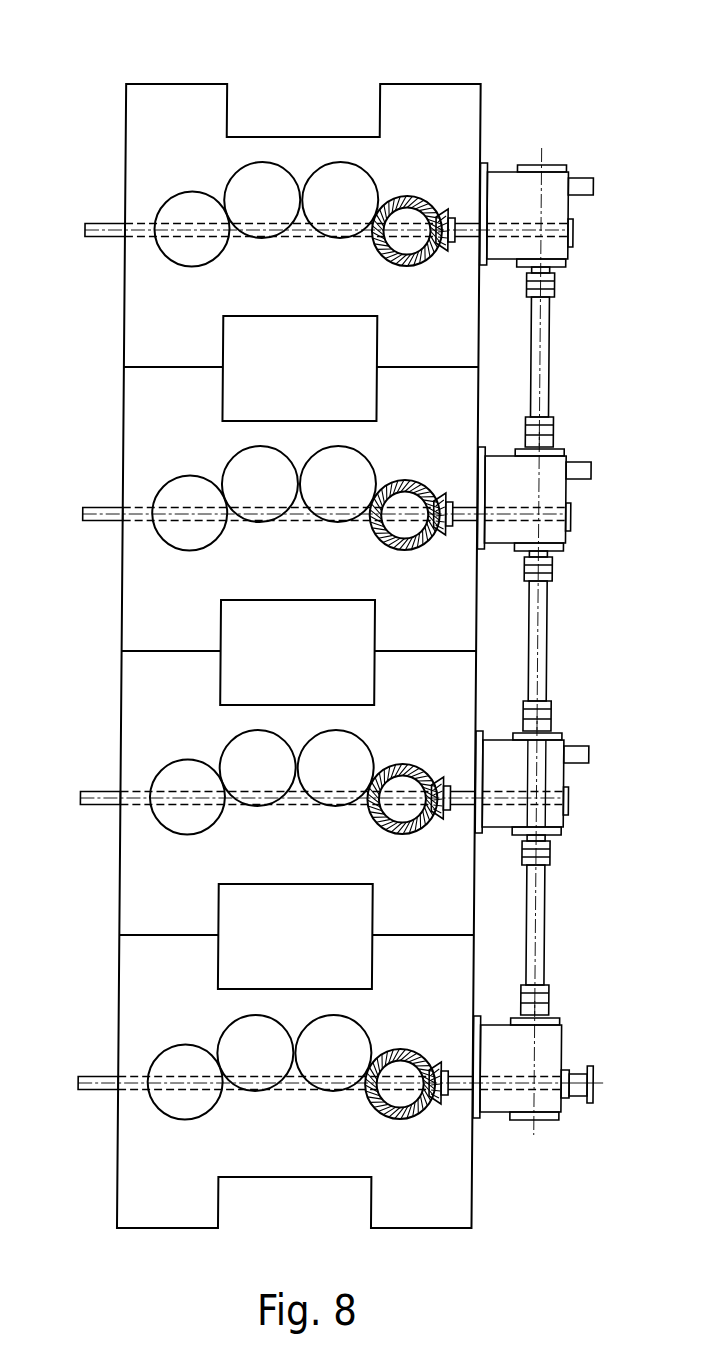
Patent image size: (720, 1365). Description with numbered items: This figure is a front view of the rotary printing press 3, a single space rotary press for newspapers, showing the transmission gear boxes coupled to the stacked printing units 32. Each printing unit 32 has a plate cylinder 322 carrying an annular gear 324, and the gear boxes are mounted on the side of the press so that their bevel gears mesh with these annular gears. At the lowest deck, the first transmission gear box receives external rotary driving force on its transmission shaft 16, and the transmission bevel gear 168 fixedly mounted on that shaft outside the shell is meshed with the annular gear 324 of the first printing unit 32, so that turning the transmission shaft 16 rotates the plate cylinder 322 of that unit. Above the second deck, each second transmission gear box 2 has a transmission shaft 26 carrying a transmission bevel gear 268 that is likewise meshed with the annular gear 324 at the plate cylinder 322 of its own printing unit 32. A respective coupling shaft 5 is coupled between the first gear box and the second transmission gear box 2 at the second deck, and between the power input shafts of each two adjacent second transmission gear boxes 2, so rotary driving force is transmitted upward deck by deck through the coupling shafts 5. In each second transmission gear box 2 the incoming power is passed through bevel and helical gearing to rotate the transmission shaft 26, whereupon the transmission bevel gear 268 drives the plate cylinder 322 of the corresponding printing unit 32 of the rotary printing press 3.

The rotary printing press 3 is at (93, 78).
The printing unit 32 is at (138, 332).
The transmission shaft 26 is at (291, 498).
The transmission shaft 16 is at (285, 1067).
The plate cylinder 322 is at (404, 610).
The annular gear 324 is at (469, 699).
The transmission bevel gear 268 is at (446, 481).
The transmission bevel gear 168 is at (443, 1050).
The second transmission gear box 2 is at (548, 641).
The coupling shaft 5 is at (562, 642).